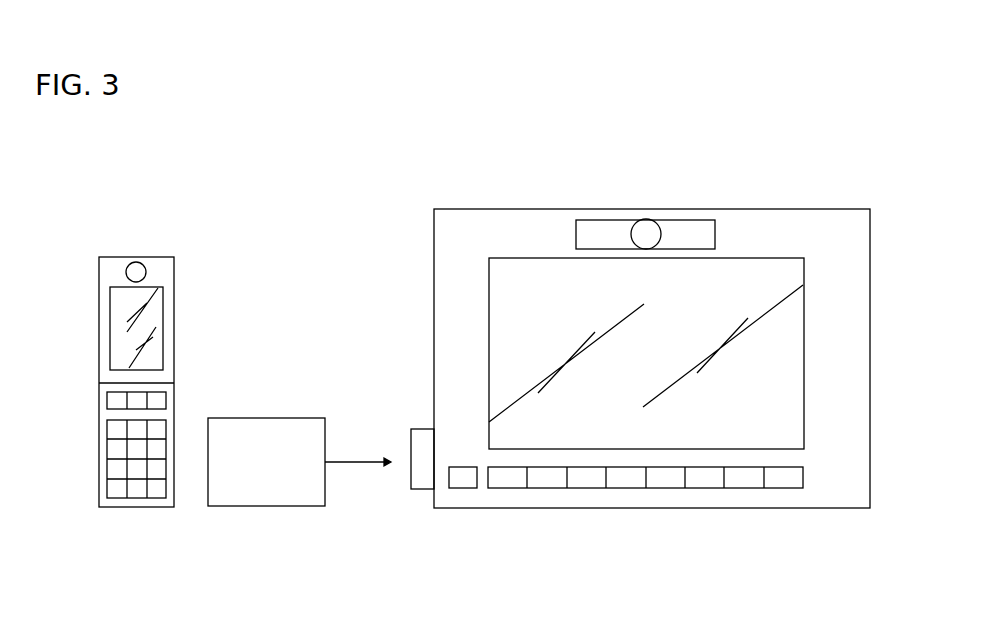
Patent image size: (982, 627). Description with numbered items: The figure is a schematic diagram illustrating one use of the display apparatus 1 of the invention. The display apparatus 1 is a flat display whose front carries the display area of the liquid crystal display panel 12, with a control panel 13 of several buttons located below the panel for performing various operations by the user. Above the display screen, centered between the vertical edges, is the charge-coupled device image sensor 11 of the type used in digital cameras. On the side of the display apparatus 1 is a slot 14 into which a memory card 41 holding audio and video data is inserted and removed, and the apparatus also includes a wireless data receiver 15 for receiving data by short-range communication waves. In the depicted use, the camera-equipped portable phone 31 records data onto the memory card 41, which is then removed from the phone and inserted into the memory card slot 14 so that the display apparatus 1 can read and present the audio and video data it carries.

The display apparatus 1 is at (748, 190).
The CCD image sensor 11 is at (633, 227).
The liquid crystal display panel 12 is at (489, 303).
The control panel 13 is at (783, 480).
The slot 14 is at (410, 440).
The wireless data receiver 15 is at (459, 489).
The camera-equipped portable phone 31 is at (98, 385).
The memory card 41 is at (240, 506).